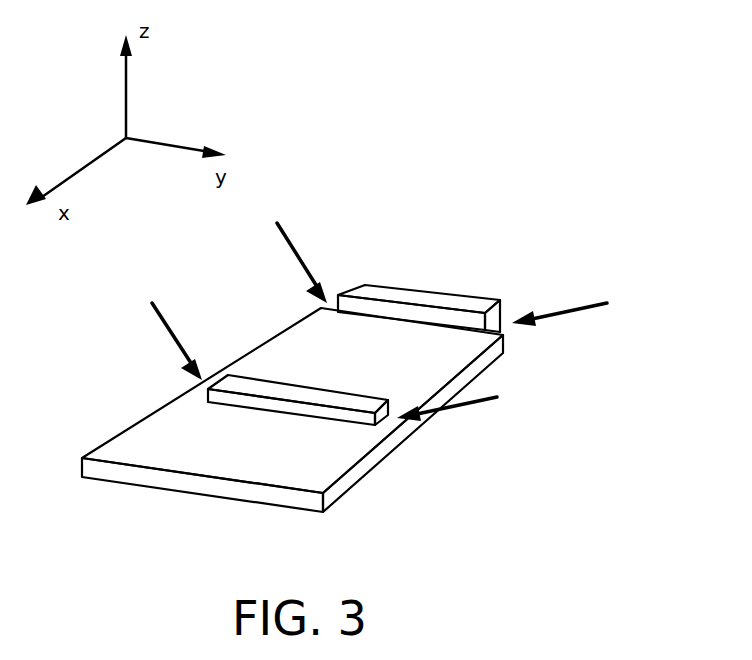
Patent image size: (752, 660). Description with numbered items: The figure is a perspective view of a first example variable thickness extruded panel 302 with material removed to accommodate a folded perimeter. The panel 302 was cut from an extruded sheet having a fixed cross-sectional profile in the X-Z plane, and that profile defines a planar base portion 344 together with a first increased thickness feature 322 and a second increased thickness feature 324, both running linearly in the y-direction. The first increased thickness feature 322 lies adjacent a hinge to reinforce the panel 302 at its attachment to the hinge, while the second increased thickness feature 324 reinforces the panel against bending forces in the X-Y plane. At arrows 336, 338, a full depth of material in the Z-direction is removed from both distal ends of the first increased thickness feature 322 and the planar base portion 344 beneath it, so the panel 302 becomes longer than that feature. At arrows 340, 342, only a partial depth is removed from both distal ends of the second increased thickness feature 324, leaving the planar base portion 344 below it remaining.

The variable thickness extruded panel 302 is at (541, 264).
The first increased thickness feature 322 is at (422, 298).
The second increased thickness feature 324 is at (308, 393).
The arrow 336 is at (581, 311).
The arrow 338 is at (296, 248).
The arrow 340 is at (481, 401).
The arrow 342 is at (164, 323).
The planar base portion 344 is at (285, 452).